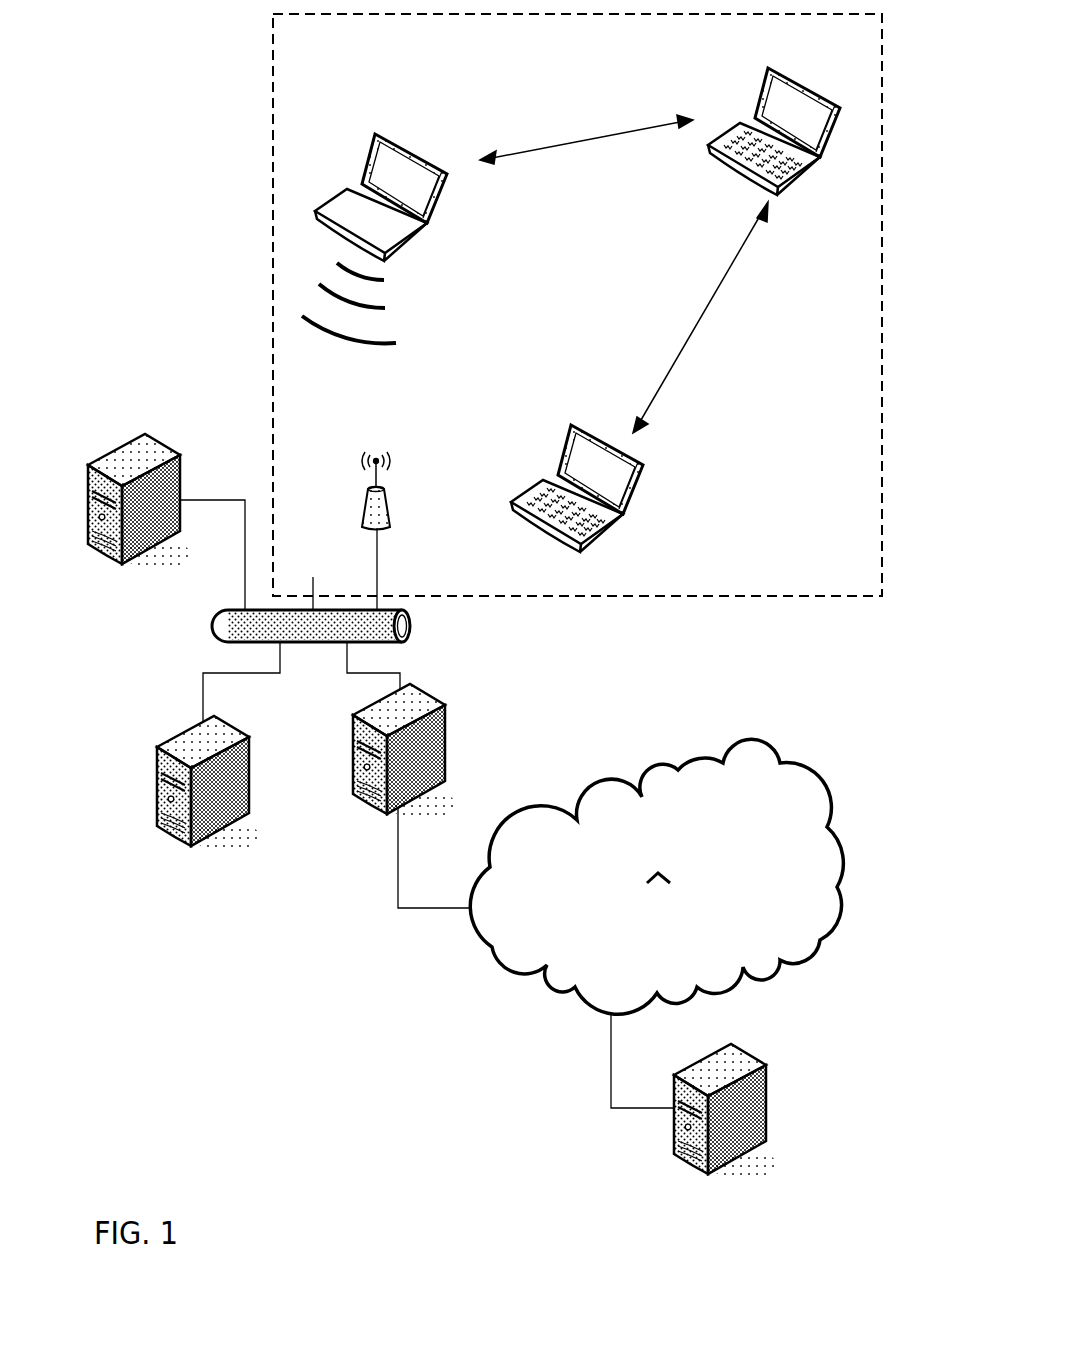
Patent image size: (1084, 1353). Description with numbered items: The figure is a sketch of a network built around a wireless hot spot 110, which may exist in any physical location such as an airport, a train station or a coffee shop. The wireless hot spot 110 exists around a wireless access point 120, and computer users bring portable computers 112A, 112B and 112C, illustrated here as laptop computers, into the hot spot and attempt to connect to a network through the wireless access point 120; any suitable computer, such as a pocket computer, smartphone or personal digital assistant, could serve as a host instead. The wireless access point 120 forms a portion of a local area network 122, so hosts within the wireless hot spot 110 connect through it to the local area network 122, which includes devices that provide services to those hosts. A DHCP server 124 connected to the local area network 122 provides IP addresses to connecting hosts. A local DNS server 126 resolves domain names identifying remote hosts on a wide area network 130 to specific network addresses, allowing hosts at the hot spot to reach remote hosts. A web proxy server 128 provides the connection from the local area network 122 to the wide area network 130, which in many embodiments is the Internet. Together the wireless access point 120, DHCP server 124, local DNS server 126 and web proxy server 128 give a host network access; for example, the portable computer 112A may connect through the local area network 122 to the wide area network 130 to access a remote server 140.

The wireless hot spot 110 is at (730, 598).
The portable computer 112A is at (405, 141).
The portable computer 112B is at (628, 505).
The portable computer 112C is at (812, 82).
The wireless access point 120 is at (338, 467).
The local area network 122 is at (412, 621).
The DHCP server 124 is at (140, 455).
The local DNS server 126 is at (150, 813).
The web proxy server 128 is at (445, 740).
The wide area network 130 is at (478, 937).
The remote server 140 is at (768, 1132).